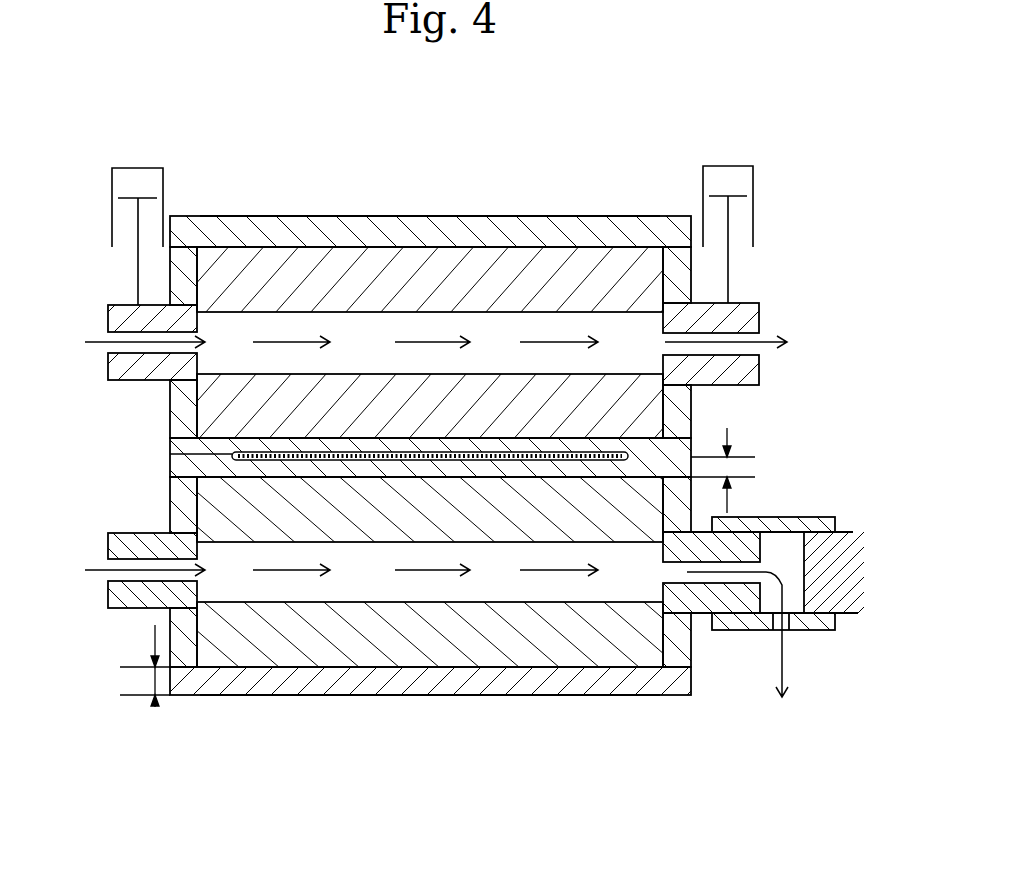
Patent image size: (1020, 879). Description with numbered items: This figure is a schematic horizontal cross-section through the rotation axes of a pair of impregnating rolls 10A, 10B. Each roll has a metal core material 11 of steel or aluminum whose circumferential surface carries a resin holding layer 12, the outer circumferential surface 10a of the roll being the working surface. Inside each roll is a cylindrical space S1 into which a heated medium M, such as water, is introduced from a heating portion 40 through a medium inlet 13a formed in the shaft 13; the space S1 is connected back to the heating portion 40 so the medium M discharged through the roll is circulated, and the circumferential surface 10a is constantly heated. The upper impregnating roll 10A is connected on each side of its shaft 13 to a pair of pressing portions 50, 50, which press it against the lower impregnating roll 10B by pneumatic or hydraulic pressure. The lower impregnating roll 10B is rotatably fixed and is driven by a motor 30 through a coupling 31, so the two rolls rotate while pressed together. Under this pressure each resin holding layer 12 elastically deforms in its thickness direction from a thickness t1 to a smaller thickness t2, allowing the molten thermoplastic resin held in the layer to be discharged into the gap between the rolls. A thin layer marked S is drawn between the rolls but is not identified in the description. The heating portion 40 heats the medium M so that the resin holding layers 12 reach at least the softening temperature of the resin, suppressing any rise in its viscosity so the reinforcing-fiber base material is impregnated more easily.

The impregnating roll 10A is at (531, 138).
The impregnating roll 10B is at (262, 719).
The circumferential surface 10a is at (330, 216).
The core material 11 is at (562, 265).
The resin holding layer 12 is at (403, 230).
The shaft 13 is at (143, 372).
The medium inlet 13a is at (108, 348).
The motor 30 is at (852, 548).
The coupling 31 is at (778, 517).
The heating portion 40 is at (433, 529).
The pressing portion 50 is at (93, 223).
The heated medium M is at (106, 342).
The sheet workpiece S is at (232, 456).
The cylindrical space S1 is at (483, 330).
The thickness t1 is at (145, 666).
The thickness t2 is at (723, 470).